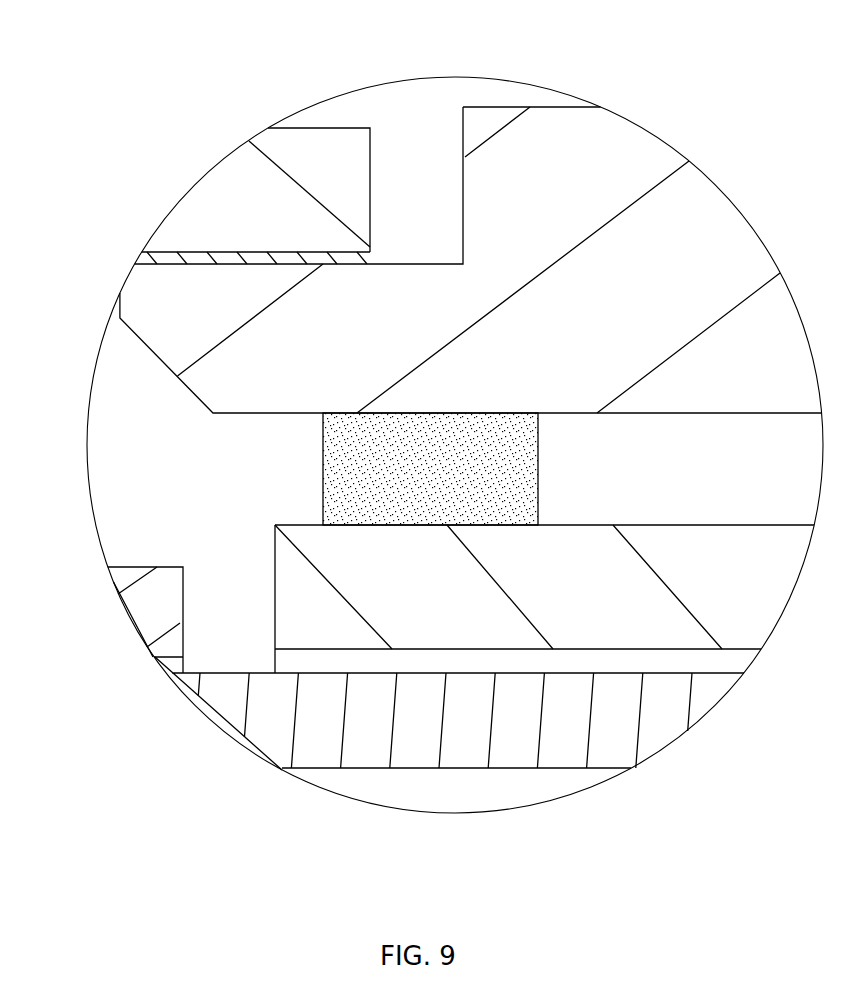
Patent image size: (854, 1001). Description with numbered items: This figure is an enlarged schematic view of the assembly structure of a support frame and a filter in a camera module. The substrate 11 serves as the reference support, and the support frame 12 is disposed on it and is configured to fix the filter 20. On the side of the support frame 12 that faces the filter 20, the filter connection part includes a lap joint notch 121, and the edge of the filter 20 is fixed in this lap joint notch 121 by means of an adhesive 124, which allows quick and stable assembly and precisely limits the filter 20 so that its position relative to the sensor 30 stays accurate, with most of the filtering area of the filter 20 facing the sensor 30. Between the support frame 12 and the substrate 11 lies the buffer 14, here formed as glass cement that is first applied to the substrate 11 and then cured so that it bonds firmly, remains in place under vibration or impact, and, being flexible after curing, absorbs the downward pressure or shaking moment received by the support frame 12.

The substrate 11 is at (597, 590).
The support frame 12 is at (692, 278).
The buffer 14 is at (408, 480).
The filter 20 is at (276, 187).
The sensor 30 is at (153, 612).
The lap joint notch 121 is at (420, 190).
The adhesive 124 is at (184, 252).